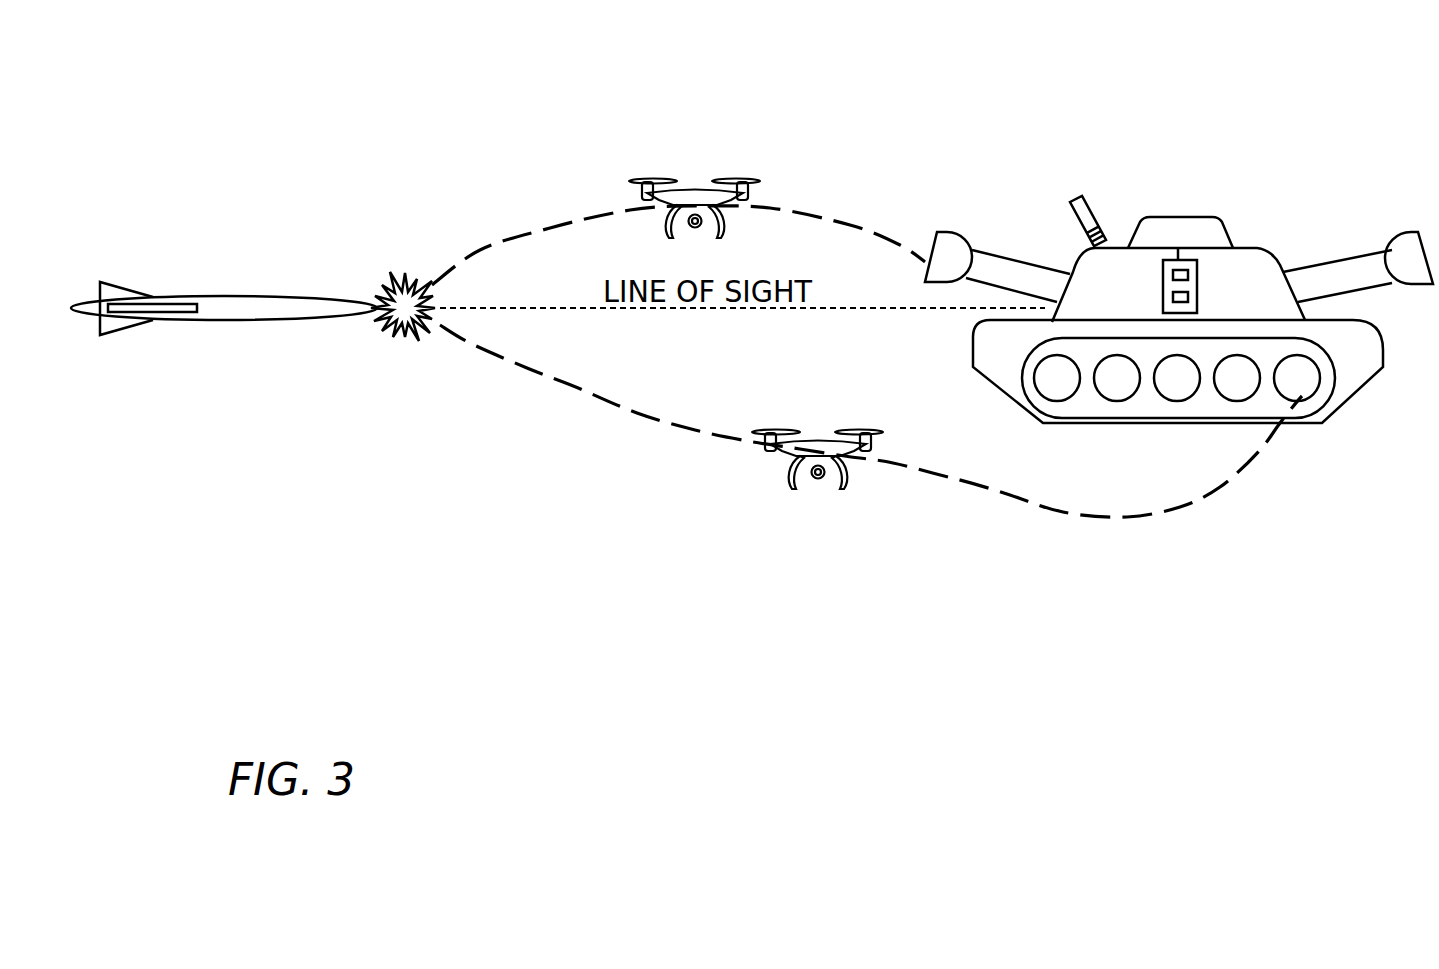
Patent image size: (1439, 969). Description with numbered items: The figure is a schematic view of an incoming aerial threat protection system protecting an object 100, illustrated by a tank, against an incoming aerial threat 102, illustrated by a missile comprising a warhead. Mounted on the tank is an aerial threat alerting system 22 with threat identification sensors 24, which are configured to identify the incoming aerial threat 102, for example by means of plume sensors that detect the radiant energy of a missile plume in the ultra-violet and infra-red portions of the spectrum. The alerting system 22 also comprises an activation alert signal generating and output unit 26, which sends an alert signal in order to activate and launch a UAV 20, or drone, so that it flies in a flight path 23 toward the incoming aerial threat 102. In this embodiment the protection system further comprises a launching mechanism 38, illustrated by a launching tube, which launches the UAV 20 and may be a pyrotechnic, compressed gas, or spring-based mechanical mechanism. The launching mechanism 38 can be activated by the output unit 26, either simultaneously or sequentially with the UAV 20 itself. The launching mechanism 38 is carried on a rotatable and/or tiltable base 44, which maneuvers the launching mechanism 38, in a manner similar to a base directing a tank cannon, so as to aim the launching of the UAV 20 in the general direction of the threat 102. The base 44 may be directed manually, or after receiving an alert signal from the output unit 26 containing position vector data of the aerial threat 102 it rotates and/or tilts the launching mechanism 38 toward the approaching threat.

The incoming aerial threat 102 is at (262, 292).
The UAV 20 is at (697, 190).
The flight path 23 is at (818, 478).
The object 100 is at (1179, 288).
The launching mechanism 38 is at (950, 232).
The base 44 is at (1085, 242).
The aerial threat alerting system 22 is at (1160, 262).
The threat identification sensors 24 is at (1190, 262).
The activation alert signal generating and output unit 26 is at (1174, 305).